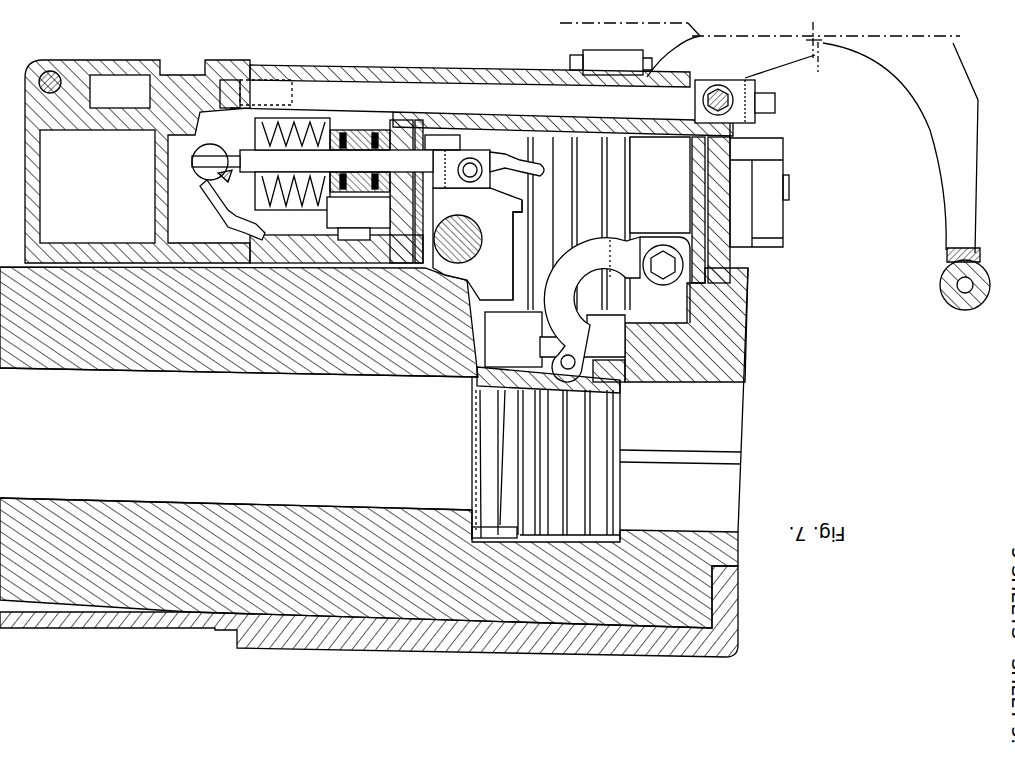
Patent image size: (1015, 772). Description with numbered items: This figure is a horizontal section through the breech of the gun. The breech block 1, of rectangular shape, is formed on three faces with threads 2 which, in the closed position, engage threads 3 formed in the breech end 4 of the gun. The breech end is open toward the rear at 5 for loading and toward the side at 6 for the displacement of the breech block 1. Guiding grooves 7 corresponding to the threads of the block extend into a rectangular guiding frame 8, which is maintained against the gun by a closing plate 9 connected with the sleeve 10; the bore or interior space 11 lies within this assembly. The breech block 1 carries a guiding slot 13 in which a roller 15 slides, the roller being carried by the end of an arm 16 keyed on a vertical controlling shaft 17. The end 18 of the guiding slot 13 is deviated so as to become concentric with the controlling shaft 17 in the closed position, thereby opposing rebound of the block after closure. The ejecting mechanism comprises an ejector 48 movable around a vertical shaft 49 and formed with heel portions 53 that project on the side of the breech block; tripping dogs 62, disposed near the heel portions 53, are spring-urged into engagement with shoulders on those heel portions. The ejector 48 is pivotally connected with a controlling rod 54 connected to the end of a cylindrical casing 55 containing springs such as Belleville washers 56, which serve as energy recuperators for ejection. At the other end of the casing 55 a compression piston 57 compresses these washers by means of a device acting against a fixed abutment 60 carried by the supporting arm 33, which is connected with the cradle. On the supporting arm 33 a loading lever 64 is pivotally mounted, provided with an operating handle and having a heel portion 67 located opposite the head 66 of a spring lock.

The breech block 1 is at (577, 507).
The threads 2 is at (607, 534).
The threads 3 is at (569, 540).
The breech end 4 is at (425, 583).
The rear opening 5 is at (705, 425).
The side opening 6 is at (731, 139).
The guiding grooves 7 is at (553, 153).
The guiding frame 8 is at (637, 155).
The closing plate 9 is at (500, 300).
The sleeve 10 is at (508, 633).
The bore 11 is at (239, 439).
The guiding slot 13 is at (513, 339).
The roller 15 is at (582, 335).
The arm 16 is at (592, 309).
The controlling shaft 17 is at (661, 262).
The end of guiding slot 18 is at (523, 383).
The supporting arm 33 is at (308, 120).
The ejector 48 is at (477, 277).
The vertical shaft 49 is at (460, 240).
The heel portions 53 is at (517, 208).
The controlling rod 54 is at (385, 165).
The cylindrical casing 55 is at (262, 118).
The Belleville washers 56 is at (305, 137).
The compression piston 57 is at (340, 125).
The fixed abutment 60 is at (458, 100).
The tripping dogs 62 is at (527, 167).
The loading lever 64 is at (923, 95).
The head 66 is at (750, 100).
The heel portion 67 is at (777, 110).